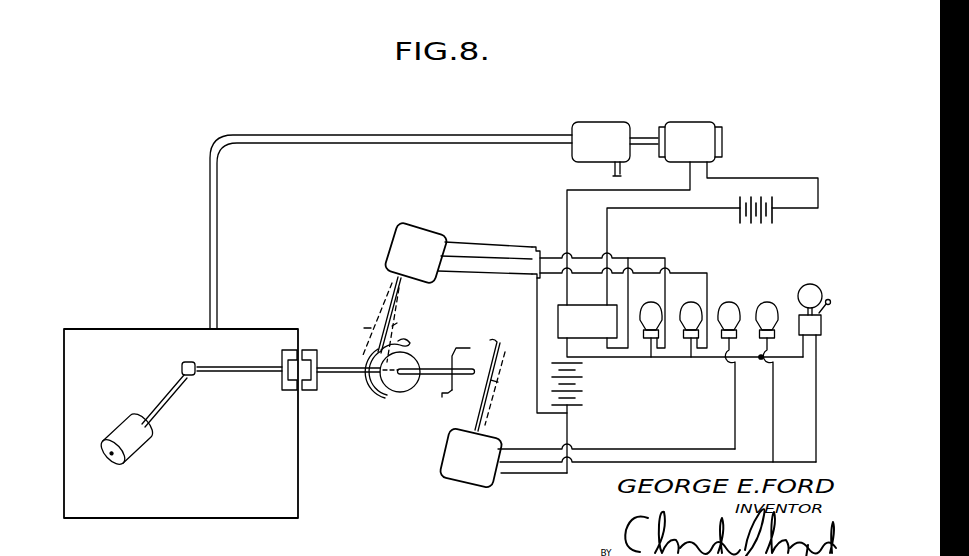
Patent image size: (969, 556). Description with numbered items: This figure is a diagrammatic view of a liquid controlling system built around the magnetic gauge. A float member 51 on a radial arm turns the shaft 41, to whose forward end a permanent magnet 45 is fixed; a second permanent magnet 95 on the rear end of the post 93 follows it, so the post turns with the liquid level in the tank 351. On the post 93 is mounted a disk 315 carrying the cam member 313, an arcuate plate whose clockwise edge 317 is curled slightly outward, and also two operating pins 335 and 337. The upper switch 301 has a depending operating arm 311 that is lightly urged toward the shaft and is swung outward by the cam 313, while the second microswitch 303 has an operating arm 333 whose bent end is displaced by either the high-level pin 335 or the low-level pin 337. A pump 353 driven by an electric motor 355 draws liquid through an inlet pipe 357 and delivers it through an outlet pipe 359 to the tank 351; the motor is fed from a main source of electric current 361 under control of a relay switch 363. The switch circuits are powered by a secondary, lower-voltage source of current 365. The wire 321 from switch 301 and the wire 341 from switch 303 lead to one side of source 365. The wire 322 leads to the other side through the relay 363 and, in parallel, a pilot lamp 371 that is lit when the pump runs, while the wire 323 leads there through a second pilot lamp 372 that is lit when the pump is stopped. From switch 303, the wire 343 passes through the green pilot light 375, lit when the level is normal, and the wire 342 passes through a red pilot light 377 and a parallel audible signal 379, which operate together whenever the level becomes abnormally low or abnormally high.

The shaft 41 is at (257, 371).
The permanent magnet 45 is at (284, 392).
The float member 51 is at (134, 447).
The post 93 is at (333, 376).
The permanent magnet 95 is at (307, 392).
The upper switch 301 is at (420, 226).
The second microswitch 303 is at (468, 483).
The operating arm 311 is at (388, 296).
The cam member 313 is at (391, 396).
The disk 315 is at (410, 357).
The clockwise edge 317 is at (410, 344).
The wire 321 is at (484, 244).
The wire 322 is at (522, 247).
The wire 323 is at (500, 277).
The operating arm 333 is at (499, 345).
The operating pin 335 is at (467, 348).
The operating pin 337 is at (449, 398).
The wire 341 is at (529, 478).
The wire 342 is at (658, 449).
The wire 343 is at (668, 448).
The tank 351 is at (240, 518).
The pump 353 is at (607, 122).
The electric motor 355 is at (712, 122).
The inlet pipe 357 is at (612, 173).
The outlet pipe 359 is at (389, 136).
The source of electric current 361 is at (777, 220).
The relay switch 363 is at (584, 305).
The secondary source of current 365 is at (588, 398).
The pilot lamp 371 is at (651, 303).
The second pilot lamp 372 is at (691, 303).
The green pilot light 375 is at (730, 303).
The red pilot light 377 is at (768, 303).
The audible signal 379 is at (812, 284).